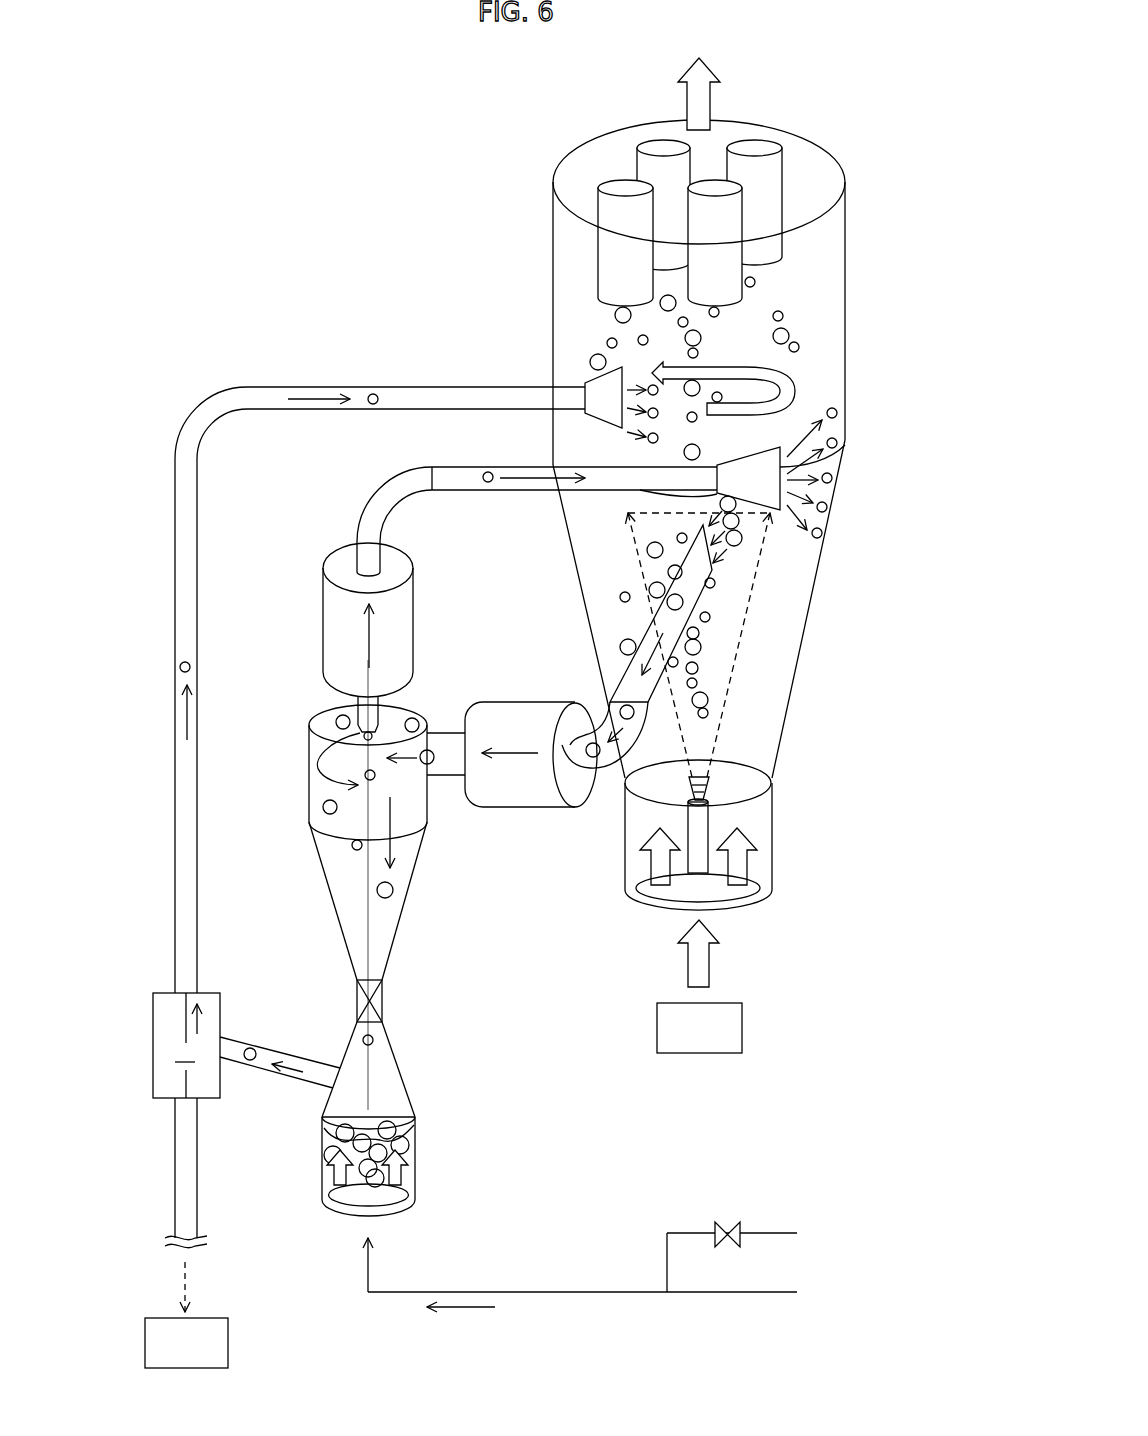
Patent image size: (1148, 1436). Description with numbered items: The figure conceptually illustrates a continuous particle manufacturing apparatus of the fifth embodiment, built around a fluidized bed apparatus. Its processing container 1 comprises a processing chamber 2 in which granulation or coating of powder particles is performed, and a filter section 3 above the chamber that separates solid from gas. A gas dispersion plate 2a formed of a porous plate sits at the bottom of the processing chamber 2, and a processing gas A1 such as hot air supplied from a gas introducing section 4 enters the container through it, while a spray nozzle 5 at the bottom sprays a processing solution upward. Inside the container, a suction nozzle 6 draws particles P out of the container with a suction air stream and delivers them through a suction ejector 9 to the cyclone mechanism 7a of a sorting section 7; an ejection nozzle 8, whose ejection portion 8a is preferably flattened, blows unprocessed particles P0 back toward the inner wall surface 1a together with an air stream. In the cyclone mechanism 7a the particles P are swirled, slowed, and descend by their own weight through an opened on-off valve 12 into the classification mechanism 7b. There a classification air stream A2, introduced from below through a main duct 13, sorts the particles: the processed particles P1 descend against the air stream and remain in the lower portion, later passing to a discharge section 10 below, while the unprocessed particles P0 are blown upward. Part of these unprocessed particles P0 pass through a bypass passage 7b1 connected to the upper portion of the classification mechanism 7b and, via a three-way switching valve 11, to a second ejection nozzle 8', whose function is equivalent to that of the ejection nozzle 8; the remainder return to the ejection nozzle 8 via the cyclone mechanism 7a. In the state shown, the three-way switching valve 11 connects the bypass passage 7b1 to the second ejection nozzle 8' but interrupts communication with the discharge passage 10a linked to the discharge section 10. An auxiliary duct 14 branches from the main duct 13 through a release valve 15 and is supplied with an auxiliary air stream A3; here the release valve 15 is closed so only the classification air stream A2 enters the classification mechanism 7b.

The processing container 1 is at (822, 562).
The inner wall surface 1a is at (805, 590).
The processing chamber 2 is at (783, 622).
The gas dispersion plate 2a is at (693, 887).
The filter section 3 is at (783, 167).
The gas introducing section 4 is at (708, 1041).
The spray nozzle 5 is at (703, 820).
The suction nozzle 6 is at (650, 633).
The sorting section 7 is at (416, 1049).
The cyclone mechanism 7a is at (418, 790).
The classification mechanism 7b is at (410, 1130).
The bypass passage 7b1 is at (262, 1065).
The ejection nozzle 8 is at (590, 494).
The second ejection nozzle 8' is at (410, 396).
The ejection portion 8a is at (757, 462).
The suction ejector 9 is at (527, 785).
The discharge section 10 is at (202, 1357).
The discharge passage 10a is at (175, 1175).
The three-way switching valve 11 is at (150, 1045).
The on-off valve 12 is at (382, 1002).
The main duct 13 is at (572, 1293).
The auxiliary duct 14 is at (775, 1232).
The release valve 15 is at (728, 1222).
The processing gas A1 is at (702, 97).
The classification air stream A2 is at (405, 1170).
The auxiliary air stream A3 is at (780, 377).
The particles P is at (742, 538).
The unprocessed particles P0 is at (373, 393).
The processed particles P1 is at (708, 700).